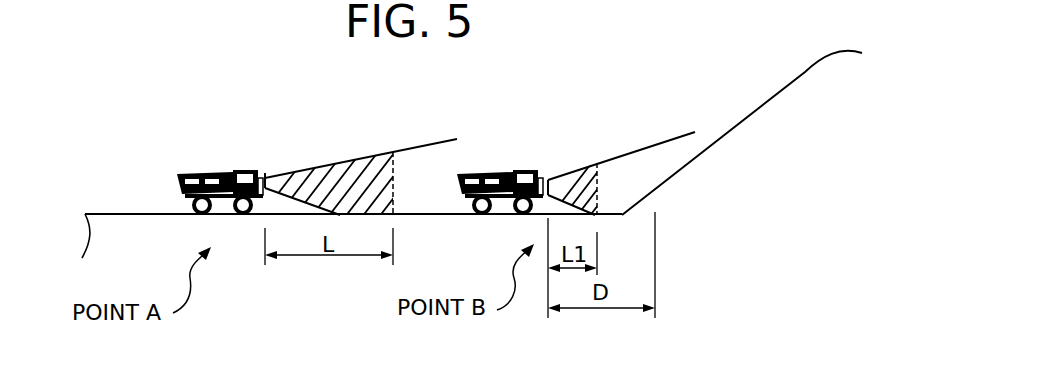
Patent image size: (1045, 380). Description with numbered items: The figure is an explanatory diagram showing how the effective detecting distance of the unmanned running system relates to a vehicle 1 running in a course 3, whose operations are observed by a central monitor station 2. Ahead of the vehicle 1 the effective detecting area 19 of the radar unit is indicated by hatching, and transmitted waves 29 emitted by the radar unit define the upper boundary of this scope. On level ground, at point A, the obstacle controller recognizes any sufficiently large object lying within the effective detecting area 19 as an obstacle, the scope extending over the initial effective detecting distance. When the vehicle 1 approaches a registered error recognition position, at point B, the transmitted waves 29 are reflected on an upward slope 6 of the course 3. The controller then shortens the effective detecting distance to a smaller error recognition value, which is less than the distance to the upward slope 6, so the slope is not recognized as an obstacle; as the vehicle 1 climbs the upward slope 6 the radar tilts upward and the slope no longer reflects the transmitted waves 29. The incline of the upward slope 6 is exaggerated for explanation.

The vehicle 1 is at (492, 172).
The central monitor station 2 is at (204, 172).
The course 3 is at (138, 213).
The upward slope 6 is at (766, 104).
The effective detecting area 19 is at (338, 160).
The transmitted waves 29 is at (424, 142).